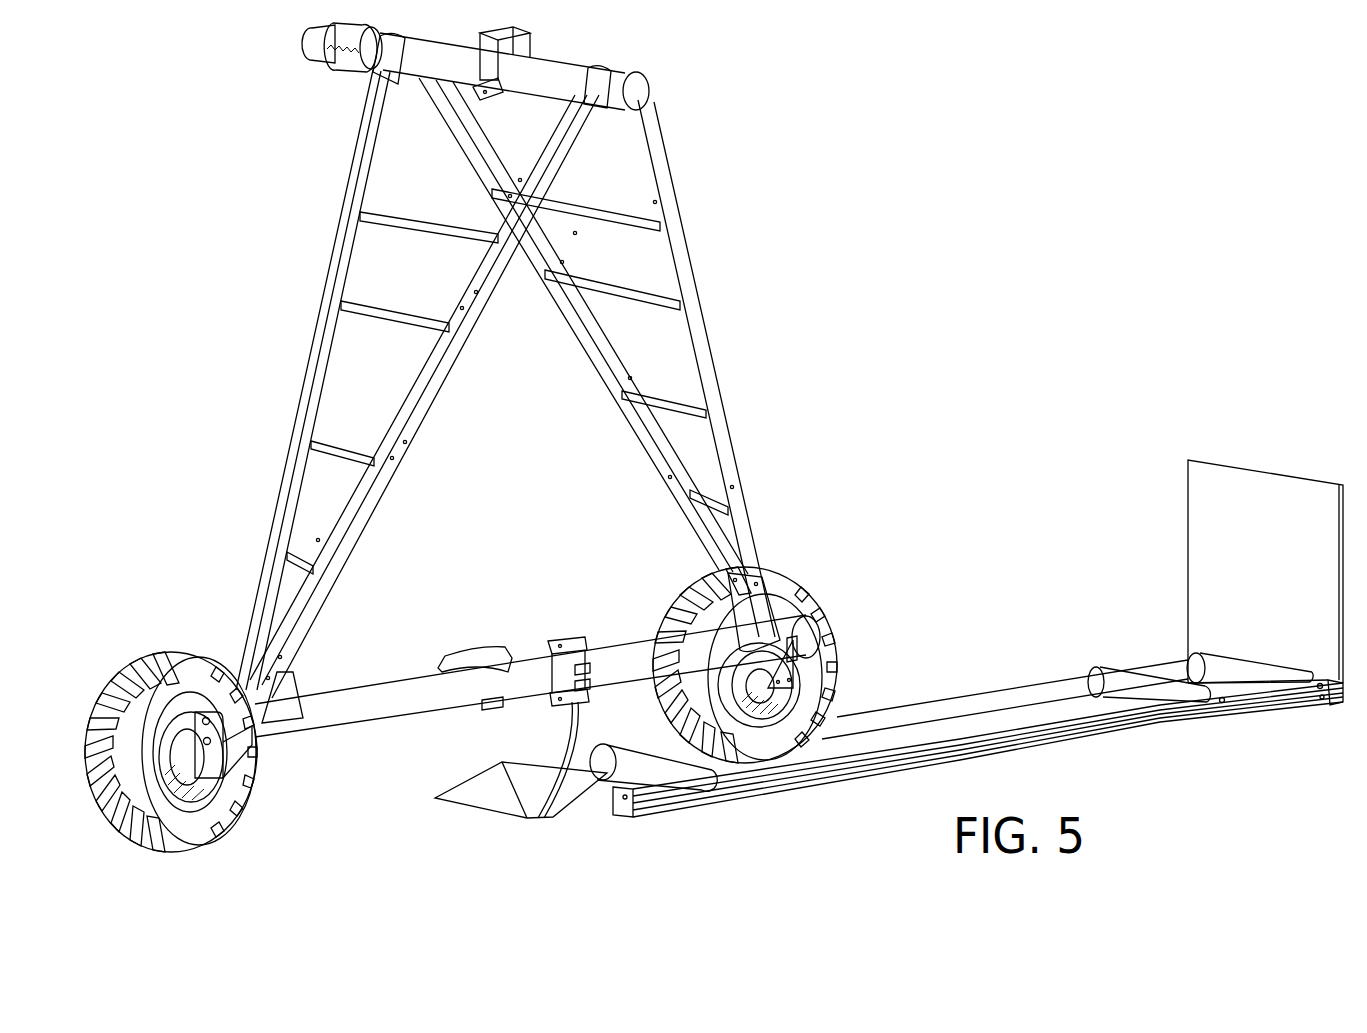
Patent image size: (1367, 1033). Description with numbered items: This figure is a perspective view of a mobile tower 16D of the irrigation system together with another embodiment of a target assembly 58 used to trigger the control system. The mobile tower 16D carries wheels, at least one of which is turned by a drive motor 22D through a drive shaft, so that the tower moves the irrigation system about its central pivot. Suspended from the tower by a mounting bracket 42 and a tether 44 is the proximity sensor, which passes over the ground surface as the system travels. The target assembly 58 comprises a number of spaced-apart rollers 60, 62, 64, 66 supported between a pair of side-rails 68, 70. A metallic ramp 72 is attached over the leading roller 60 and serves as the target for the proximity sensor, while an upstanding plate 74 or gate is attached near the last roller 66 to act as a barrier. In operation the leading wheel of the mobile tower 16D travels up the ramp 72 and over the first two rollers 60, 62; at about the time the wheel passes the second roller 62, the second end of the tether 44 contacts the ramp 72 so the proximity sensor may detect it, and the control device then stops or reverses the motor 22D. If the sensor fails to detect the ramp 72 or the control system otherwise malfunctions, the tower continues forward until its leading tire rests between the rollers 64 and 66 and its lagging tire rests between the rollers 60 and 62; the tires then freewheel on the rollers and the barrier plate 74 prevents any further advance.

The mobile tower 16D is at (643, 65).
The target assembly 58 is at (835, 318).
The mounting bracket 42 is at (573, 627).
The drive motor 22D is at (460, 663).
The tether 44 is at (550, 746).
The metallic ramp 72 is at (473, 788).
The roller 62 is at (643, 760).
The leading roller 60 is at (600, 805).
The side-rail 68 is at (940, 703).
The side-rail 70 is at (1050, 723).
The roller 64 is at (1137, 683).
The last roller 66 is at (1212, 668).
The upstanding plate 74 is at (1237, 568).